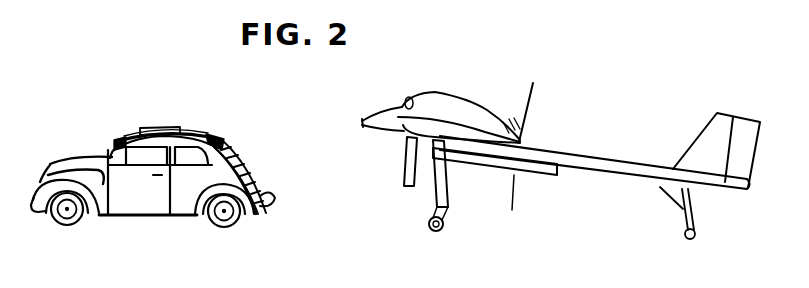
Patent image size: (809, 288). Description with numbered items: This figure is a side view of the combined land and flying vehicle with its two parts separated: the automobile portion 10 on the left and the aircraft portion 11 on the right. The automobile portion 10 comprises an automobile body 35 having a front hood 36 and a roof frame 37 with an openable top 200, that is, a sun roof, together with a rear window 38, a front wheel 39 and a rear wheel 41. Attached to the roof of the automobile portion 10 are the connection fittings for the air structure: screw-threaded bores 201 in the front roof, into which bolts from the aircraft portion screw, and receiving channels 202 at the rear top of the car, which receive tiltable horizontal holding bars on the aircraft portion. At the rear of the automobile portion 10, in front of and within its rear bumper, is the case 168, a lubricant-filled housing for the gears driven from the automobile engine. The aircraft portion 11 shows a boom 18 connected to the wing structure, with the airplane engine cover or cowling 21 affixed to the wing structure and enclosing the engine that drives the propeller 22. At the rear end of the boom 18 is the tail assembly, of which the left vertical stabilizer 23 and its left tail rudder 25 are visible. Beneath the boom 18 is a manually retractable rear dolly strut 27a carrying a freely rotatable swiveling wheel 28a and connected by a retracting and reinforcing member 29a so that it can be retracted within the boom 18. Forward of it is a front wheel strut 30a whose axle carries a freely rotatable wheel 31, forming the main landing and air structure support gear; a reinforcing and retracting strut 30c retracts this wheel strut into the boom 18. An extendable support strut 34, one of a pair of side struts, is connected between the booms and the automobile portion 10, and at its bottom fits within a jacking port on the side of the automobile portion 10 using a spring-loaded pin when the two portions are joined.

The automobile portion 10 is at (103, 141).
The aircraft portion 11 is at (570, 143).
The boom 18 is at (614, 156).
The airplane engine cover (cowling) 21 is at (452, 99).
The propeller 22 is at (535, 85).
The left vertical stabilizer 23 is at (718, 113).
The left tail rudder 25 is at (758, 120).
The rear dolly strut 27a is at (692, 205).
The swiveling wheel 28a is at (696, 233).
The retracting and reinforcing member 29a is at (661, 196).
The front wheel strut 30a is at (436, 199).
The reinforcing and retracting strut 30c is at (456, 161).
The wheel 31 is at (444, 230).
The extendable support strut 34 is at (403, 160).
The automobile body 35 is at (167, 223).
The front hood 36 is at (65, 158).
The roof frame 37 is at (174, 132).
The rear window 38 is at (240, 150).
The front wheel 39 is at (65, 226).
The rear wheel 41 is at (220, 229).
The case 168 is at (268, 190).
The openable top 200 is at (147, 134).
The screw-threaded bores 201 is at (122, 140).
The receiving channels 202 is at (216, 135).